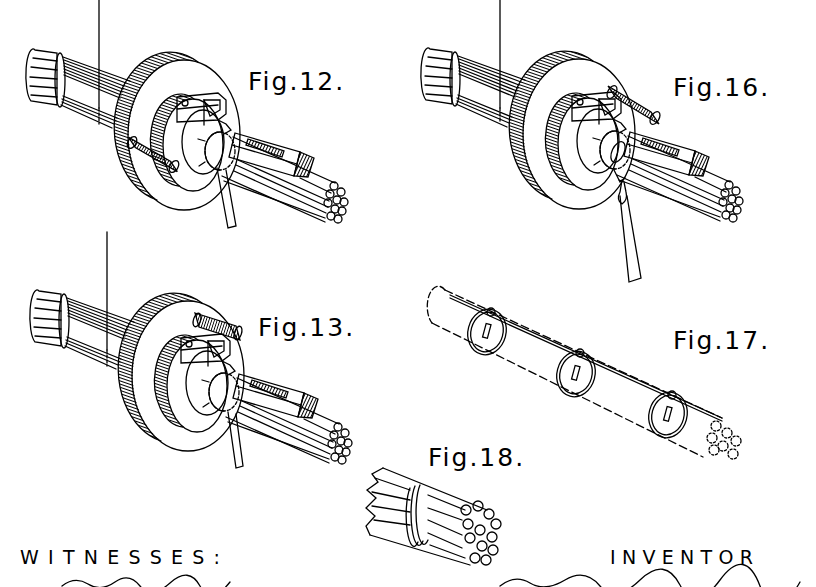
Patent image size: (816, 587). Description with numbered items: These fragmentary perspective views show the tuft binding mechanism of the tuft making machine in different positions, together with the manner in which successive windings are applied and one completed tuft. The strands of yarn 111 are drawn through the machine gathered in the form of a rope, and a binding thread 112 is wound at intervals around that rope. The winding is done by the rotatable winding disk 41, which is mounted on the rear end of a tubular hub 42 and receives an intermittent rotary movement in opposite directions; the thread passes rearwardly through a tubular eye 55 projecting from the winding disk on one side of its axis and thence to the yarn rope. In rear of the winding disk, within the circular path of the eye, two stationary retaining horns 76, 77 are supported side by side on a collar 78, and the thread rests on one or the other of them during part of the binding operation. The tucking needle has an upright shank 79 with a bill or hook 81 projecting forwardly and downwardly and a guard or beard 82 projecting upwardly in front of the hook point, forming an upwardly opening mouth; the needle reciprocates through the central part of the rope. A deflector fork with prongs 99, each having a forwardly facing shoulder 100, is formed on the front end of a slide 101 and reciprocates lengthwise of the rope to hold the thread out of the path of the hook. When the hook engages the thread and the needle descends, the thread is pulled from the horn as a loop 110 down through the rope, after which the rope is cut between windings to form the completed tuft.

In FIG. 12, the winding disk 41 is at (185, 64).
In FIG. 13, the winding disk 41 is at (146, 440).
In FIG. 16, the winding disk 41 is at (521, 181).
In FIG. 12, the tubular hub 42 is at (118, 83).
In FIG. 13, the tubular hub 42 is at (112, 372).
In FIG. 16, the tubular hub 42 is at (506, 130).
In FIG. 12, the eye 55 is at (150, 158).
In FIG. 13, the eye 55 is at (215, 316).
In FIG. 16, the eye 55 is at (654, 112).
In FIG. 12, the retaining horn 76 is at (195, 113).
In FIG. 13, the retaining horn 76 is at (200, 360).
In FIG. 16, the retaining horn 76 is at (582, 118).
In FIG. 12, the retaining horn 77 is at (210, 120).
In FIG. 13, the retaining horn 77 is at (222, 362).
In FIG. 16, the retaining horn 77 is at (618, 97).
In FIG. 12, the collar 78 is at (177, 175).
In FIG. 13, the collar 78 is at (160, 402).
In FIG. 16, the collar 78 is at (556, 170).
In FIG. 12, the needle shank 79 is at (227, 224).
In FIG. 13, the needle shank 79 is at (238, 468).
In FIG. 16, the needle shank 79 is at (641, 281).
In FIG. 12, the bill or hook 81 is at (230, 128).
In FIG. 13, the bill or hook 81 is at (236, 374).
In FIG. 16, the bill or hook 81 is at (632, 198).
In FIG. 16, the guard or beard 82 is at (619, 203).
In FIG. 12, the deflector prong 99 is at (240, 137).
In FIG. 13, the deflector prong 99 is at (250, 384).
In FIG. 16, the deflector prong 99 is at (651, 150).
In FIG. 12, the shoulder 100 is at (288, 138).
In FIG. 13, the shoulder 100 is at (266, 394).
In FIG. 16, the shoulder 100 is at (680, 146).
In FIG. 12, the slide 101 is at (312, 164).
In FIG. 13, the slide 101 is at (316, 401).
In FIG. 16, the slide 101 is at (722, 169).
In FIG. 16, the loop 110 is at (612, 176).
In FIG. 17, the loop 110 is at (480, 341).
In FIG. 12, the strands of yarn 111 is at (340, 206).
In FIG. 13, the strands of yarn 111 is at (346, 443).
In FIG. 16, the strands of yarn 111 is at (733, 212).
In FIG. 17, the strands of yarn 111 is at (722, 454).
In FIG. 18, the strands of yarn 111 is at (494, 510).
In FIG. 12, the binding thread 112 is at (98, 24).
In FIG. 13, the binding thread 112 is at (106, 256).
In FIG. 16, the binding thread 112 is at (499, 24).
In FIG. 17, the binding thread 112 is at (452, 296).
In FIG. 18, the binding thread 112 is at (415, 540).